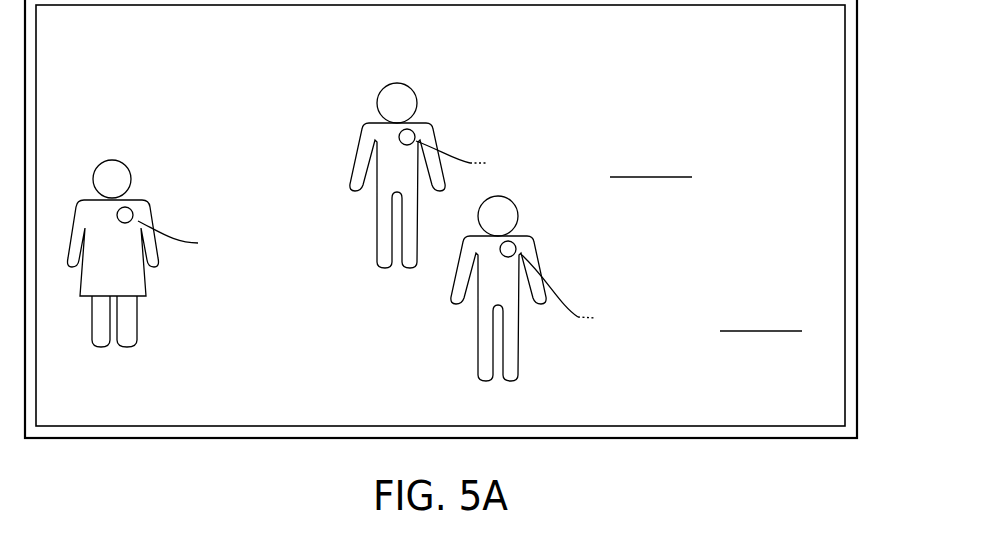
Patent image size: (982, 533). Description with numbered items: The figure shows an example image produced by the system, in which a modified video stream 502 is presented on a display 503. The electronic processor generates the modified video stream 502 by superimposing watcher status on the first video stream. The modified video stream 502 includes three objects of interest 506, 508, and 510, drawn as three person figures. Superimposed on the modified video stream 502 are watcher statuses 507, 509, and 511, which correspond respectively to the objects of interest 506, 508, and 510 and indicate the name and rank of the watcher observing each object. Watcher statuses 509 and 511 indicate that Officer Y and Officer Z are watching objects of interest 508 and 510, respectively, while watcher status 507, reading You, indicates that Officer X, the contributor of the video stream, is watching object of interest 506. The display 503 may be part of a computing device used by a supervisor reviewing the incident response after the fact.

The modified video stream 502 is at (786, 388).
The display 503 is at (725, 439).
The object of interest 506 is at (140, 315).
The watcher status 507 is at (220, 210).
The object of interest 508 is at (375, 238).
The watcher status 509 is at (552, 130).
The object of interest 510 is at (523, 345).
The watcher status 511 is at (755, 280).